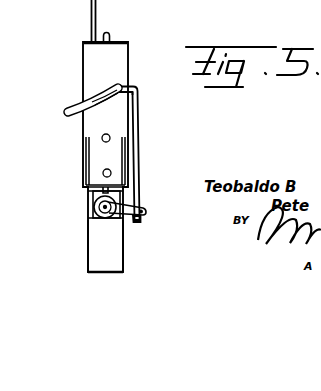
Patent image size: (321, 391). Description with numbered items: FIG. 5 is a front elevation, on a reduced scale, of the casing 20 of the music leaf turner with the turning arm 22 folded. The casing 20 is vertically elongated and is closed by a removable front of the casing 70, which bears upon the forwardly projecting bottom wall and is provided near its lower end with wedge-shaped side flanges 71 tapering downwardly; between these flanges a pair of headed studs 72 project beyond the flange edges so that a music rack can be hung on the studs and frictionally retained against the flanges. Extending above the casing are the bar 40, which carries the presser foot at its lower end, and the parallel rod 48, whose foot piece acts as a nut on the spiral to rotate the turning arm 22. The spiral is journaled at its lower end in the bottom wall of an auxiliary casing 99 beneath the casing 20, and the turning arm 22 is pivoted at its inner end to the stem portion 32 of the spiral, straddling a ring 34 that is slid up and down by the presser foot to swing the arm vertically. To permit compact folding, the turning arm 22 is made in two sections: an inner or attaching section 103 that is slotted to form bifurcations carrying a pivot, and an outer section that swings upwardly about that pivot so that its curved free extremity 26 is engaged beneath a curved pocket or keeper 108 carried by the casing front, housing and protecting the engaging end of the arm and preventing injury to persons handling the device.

The casing 20 is at (82, 62).
The turning arm 22 is at (139, 116).
The curved free extremity 26 is at (128, 88).
The stem portion 32 is at (103, 190).
The ring 34 is at (95, 206).
The bar 40 is at (110, 35).
The rod 48 is at (91, 10).
The front of the casing 70 is at (121, 56).
The wedge-shaped side flanges 71 is at (86, 150).
The headed studs 72 is at (100, 140).
The auxiliary casing 99 is at (102, 237).
The inner or attaching section 103 is at (133, 218).
The curved pocket or keeper 108 is at (72, 106).